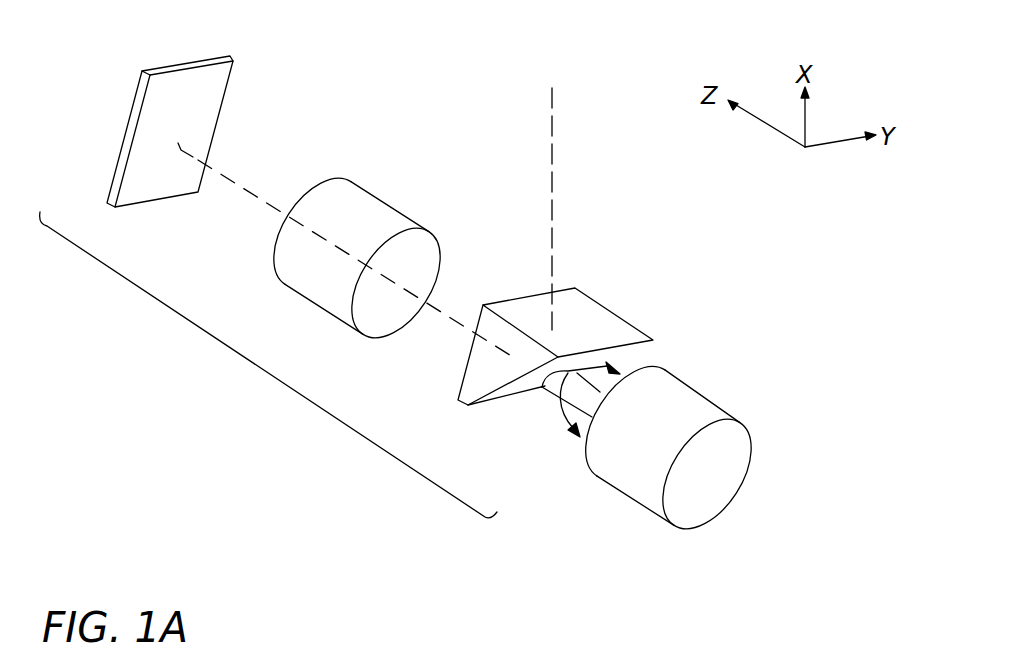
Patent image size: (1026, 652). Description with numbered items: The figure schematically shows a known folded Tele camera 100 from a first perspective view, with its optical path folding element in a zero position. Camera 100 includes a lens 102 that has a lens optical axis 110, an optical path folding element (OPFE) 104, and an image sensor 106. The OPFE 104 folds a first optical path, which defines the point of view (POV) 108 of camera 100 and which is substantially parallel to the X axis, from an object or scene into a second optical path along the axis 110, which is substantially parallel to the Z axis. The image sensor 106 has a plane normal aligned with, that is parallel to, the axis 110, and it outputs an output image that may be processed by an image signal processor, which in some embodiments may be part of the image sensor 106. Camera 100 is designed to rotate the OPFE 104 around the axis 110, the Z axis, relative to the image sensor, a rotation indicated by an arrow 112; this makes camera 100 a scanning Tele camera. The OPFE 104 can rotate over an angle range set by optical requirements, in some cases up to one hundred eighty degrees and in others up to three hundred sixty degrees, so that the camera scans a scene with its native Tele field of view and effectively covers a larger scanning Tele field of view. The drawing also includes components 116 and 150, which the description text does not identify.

The folded Tele camera 100 is at (272, 371).
The lens 102 is at (398, 211).
The optical path folding element 104 is at (619, 315).
The image sensor 106 is at (218, 117).
The point of view 108 is at (554, 155).
The lens optical axis 110 is at (228, 178).
The arrow 112 is at (571, 430).
The motor 116 is at (704, 396).
The light spot 150 is at (178, 143).